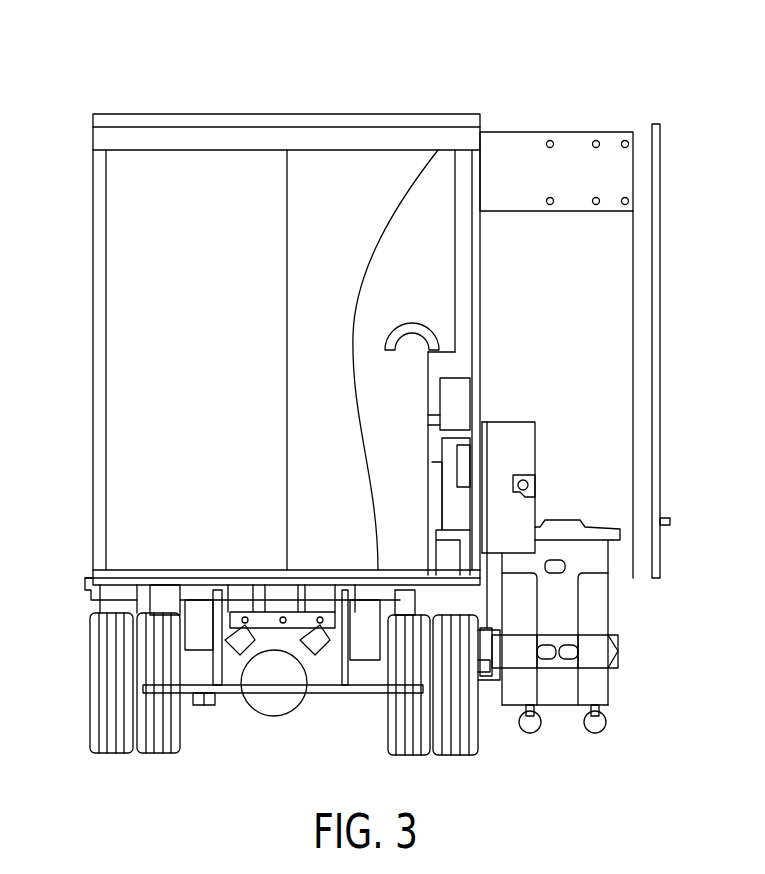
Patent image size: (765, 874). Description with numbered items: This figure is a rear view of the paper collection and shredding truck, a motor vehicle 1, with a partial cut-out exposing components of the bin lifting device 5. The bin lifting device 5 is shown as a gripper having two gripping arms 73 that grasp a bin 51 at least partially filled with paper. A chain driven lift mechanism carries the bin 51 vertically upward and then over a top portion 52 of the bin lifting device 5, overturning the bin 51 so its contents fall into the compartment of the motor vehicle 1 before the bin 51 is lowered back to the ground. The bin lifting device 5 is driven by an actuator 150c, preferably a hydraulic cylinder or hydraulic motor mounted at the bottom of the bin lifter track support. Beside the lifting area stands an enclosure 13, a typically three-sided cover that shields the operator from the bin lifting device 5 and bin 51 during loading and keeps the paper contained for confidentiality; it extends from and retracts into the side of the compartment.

The motor vehicle 1 is at (62, 70).
The enclosure 13 is at (643, 352).
The top portion 52 is at (413, 325).
The bin lifting device 5 is at (618, 655).
The gripping arms 73 is at (620, 640).
The bin 51 is at (593, 592).
The actuator 150c is at (480, 672).